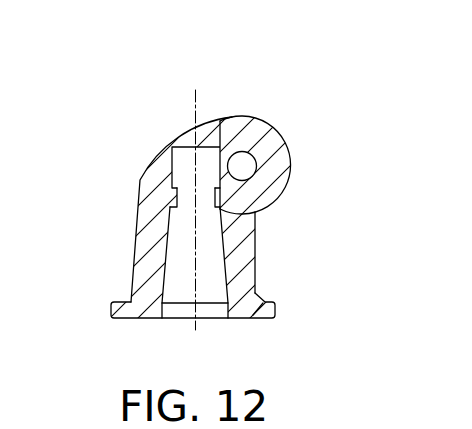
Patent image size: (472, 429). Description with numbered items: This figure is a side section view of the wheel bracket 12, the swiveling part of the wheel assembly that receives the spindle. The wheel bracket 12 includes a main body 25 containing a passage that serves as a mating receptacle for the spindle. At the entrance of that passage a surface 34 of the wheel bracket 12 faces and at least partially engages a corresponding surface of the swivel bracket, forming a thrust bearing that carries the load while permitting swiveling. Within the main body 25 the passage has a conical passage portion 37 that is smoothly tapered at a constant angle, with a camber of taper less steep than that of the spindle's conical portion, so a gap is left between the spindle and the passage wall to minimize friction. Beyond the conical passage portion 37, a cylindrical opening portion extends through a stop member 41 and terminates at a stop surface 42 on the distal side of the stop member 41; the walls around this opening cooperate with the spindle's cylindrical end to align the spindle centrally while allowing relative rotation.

The wheel bracket 12 is at (302, 146).
The main body 25 is at (255, 257).
The surface 34 is at (252, 318).
The passage portion 37 is at (185, 232).
The stop member 41 is at (217, 192).
The stop surface 42 is at (217, 188).